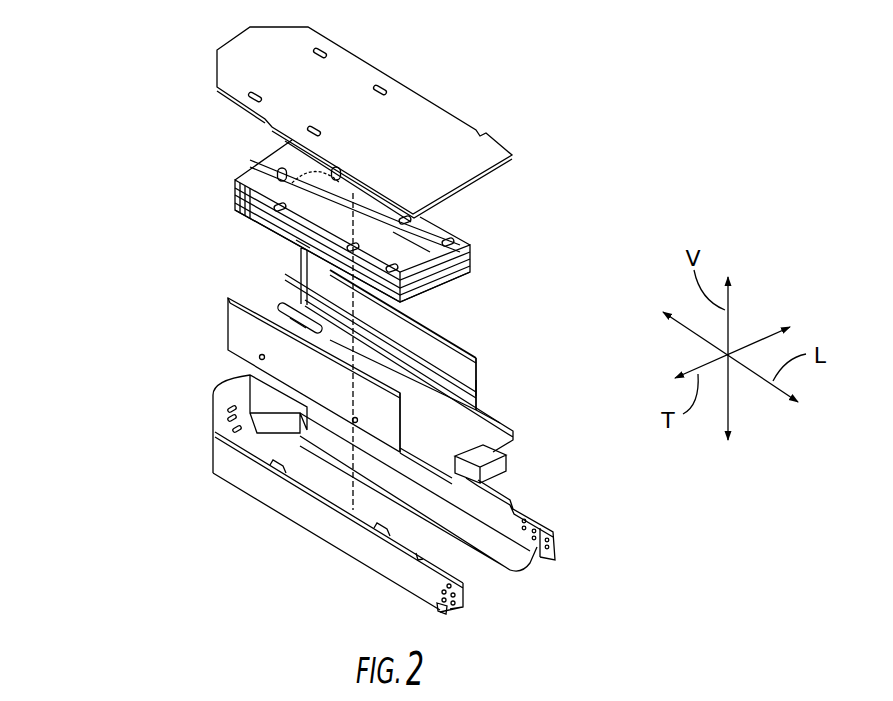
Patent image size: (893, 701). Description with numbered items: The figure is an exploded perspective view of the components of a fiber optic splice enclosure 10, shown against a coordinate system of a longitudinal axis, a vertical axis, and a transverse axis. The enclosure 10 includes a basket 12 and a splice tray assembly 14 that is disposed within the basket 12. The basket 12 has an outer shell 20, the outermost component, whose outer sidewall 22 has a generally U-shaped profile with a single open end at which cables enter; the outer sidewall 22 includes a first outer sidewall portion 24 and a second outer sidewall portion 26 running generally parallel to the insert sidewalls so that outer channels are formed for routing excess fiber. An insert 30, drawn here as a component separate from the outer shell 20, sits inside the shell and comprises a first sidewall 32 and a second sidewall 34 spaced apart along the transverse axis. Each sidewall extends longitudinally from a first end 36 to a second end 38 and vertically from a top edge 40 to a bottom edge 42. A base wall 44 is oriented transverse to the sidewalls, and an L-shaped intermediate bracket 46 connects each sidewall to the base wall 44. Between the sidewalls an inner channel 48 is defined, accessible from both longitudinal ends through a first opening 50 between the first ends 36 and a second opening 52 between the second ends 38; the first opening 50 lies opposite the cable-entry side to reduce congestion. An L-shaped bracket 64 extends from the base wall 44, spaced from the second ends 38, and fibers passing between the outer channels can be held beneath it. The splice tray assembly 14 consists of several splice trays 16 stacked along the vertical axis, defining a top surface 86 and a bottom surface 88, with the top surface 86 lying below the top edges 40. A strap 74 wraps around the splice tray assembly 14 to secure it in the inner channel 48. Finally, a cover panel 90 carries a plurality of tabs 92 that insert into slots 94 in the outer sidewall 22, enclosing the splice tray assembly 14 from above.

The fiber optic splice enclosure 10 is at (100, 208).
The basket 12 is at (158, 382).
The splice tray assembly 14 is at (519, 257).
The splice trays 16 is at (475, 240).
The outer shell 20 is at (210, 471).
The outer sidewall 22 is at (240, 472).
The first outer sidewall portion 24 is at (328, 528).
The second outer sidewall portion 26 is at (493, 497).
The insert 30 is at (483, 352).
The first sidewall 32 is at (238, 337).
The second sidewall 34 is at (448, 352).
The first end 36 is at (300, 284).
The second end 38 is at (480, 377).
The top edge 40 is at (420, 325).
The bottom edge 42 is at (333, 428).
The base wall 44 is at (508, 462).
The intermediate bracket 46 is at (494, 421).
The inner channel 48 is at (287, 322).
The first opening 50 is at (240, 290).
The second opening 52 is at (466, 388).
The bracket 64 is at (473, 478).
The strap 74 is at (298, 241).
The top surface 86 is at (422, 214).
The bottom surface 88 is at (458, 283).
The cover panel 90 is at (428, 92).
The tabs 92 is at (381, 62).
The slots 94 is at (273, 478).